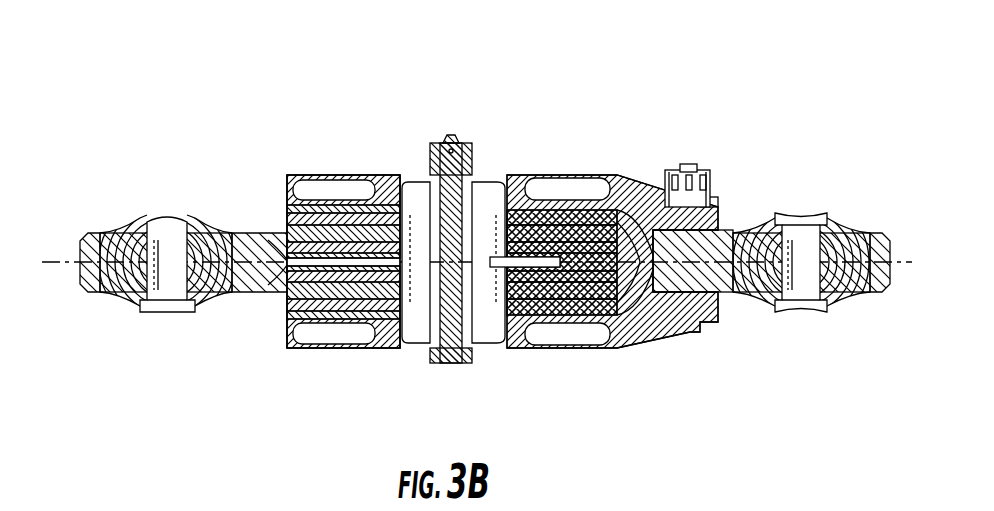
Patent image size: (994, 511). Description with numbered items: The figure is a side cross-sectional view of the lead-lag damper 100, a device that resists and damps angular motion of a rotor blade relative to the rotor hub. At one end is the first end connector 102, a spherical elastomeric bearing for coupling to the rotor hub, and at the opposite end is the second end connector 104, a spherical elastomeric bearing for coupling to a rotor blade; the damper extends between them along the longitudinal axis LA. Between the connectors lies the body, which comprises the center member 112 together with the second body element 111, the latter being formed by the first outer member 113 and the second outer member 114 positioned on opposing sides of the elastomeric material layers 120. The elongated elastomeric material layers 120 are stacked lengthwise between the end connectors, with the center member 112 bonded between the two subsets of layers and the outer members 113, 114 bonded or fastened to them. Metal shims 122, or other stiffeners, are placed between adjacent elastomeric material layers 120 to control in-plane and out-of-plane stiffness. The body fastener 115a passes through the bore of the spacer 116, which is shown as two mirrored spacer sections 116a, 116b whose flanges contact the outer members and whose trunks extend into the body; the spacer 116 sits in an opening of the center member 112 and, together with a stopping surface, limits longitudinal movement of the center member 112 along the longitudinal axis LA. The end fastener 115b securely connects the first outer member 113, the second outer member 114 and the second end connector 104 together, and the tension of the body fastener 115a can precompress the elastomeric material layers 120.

The lead-lag damper 100 is at (258, 91).
The first end connector 102 is at (106, 229).
The second end connector 104 is at (850, 224).
The longitudinal axis LA is at (58, 257).
The second body element 111 is at (343, 252).
The center member 112 is at (247, 236).
The first outer member 113 is at (380, 194).
The second outer member 114 is at (380, 332).
The body fastener 115a is at (450, 134).
The end fastener 115b is at (690, 169).
The spacer 116 is at (503, 241).
The first spacer section 116a is at (487, 177).
The second spacer section 116b is at (487, 350).
The elastomeric material layers 120 is at (618, 240).
The metal shims 122 is at (618, 290).